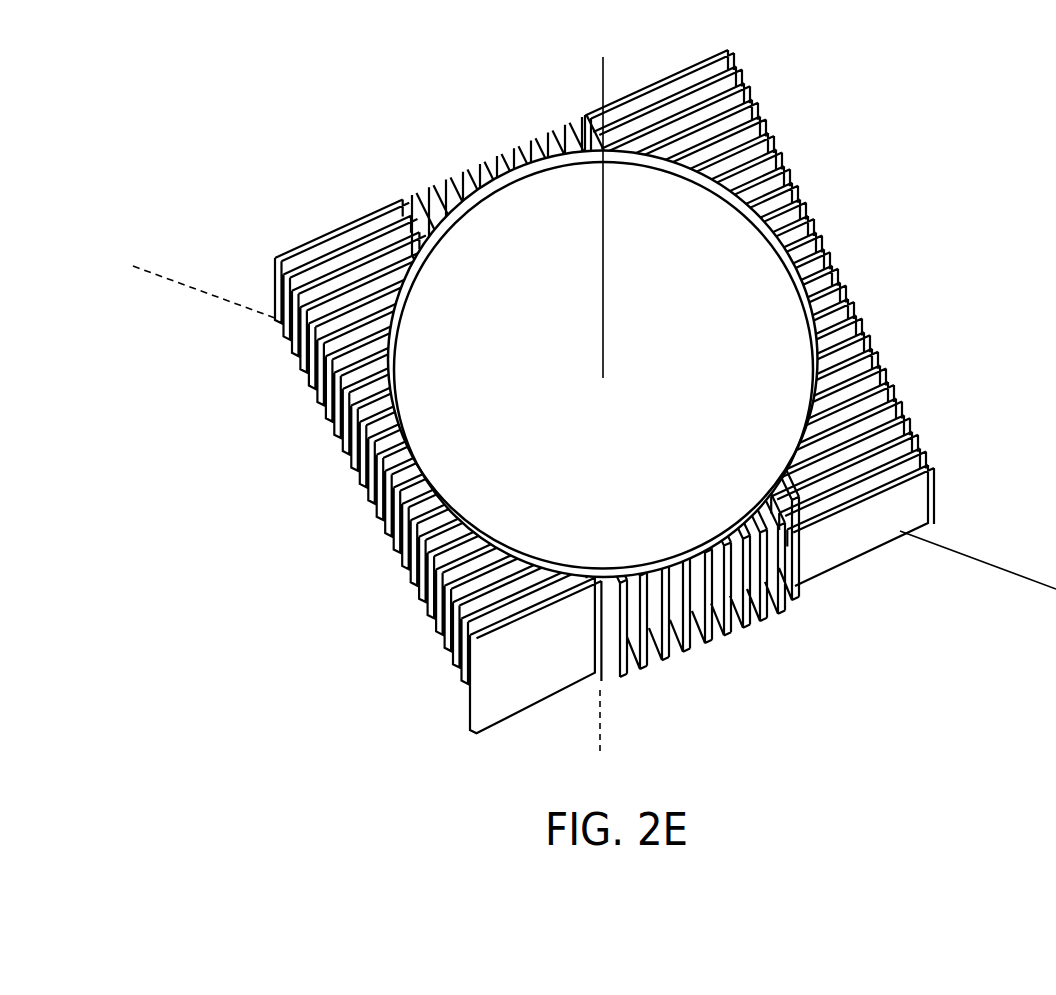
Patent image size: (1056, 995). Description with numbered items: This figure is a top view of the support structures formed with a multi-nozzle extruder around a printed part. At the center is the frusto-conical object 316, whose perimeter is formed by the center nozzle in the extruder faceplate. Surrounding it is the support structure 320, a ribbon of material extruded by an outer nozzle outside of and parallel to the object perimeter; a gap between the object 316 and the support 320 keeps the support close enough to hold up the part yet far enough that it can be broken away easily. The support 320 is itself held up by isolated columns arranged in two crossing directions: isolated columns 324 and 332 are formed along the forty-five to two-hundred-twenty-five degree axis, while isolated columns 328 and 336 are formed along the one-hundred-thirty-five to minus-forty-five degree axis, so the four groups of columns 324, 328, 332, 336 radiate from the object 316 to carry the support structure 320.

The frusto-conical object 316 is at (763, 272).
The support structure 320 is at (822, 284).
The isolated columns 324 is at (352, 528).
The isolated columns 328 is at (713, 666).
The isolated columns 332 is at (920, 375).
The isolated columns 336 is at (475, 143).